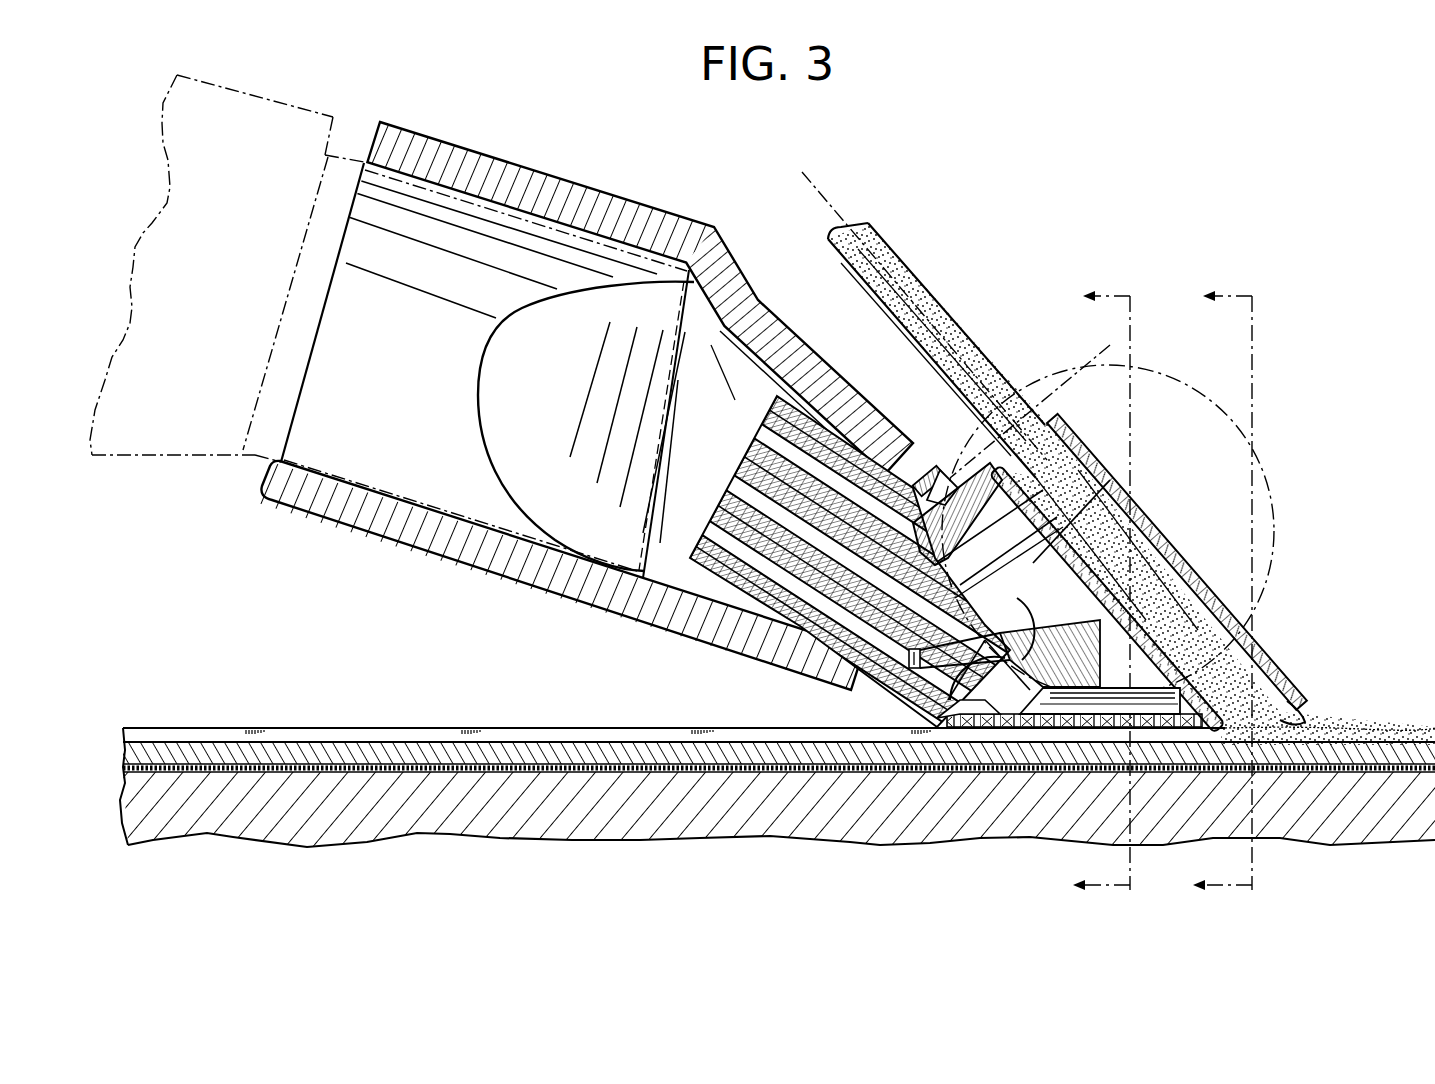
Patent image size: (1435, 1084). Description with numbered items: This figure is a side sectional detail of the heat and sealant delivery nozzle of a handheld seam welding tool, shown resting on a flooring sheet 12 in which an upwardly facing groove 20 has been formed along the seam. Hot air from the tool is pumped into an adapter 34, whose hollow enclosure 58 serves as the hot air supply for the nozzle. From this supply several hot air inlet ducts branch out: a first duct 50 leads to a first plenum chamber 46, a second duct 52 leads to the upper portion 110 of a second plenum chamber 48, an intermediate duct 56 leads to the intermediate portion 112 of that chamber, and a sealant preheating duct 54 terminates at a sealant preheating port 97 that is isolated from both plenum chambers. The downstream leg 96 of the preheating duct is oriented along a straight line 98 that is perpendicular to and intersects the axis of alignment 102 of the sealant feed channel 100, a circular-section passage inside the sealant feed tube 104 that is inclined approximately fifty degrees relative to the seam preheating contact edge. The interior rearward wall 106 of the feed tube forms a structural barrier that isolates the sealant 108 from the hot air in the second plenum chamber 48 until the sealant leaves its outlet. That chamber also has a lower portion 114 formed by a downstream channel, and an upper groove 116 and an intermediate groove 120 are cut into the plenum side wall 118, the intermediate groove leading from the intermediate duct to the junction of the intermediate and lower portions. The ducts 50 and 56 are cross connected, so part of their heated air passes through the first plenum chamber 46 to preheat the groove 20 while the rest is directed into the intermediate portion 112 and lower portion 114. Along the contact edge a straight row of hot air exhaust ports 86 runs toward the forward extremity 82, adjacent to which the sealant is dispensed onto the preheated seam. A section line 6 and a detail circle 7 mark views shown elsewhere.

The adapter 34 is at (494, 138).
The hollow enclosure 58 is at (540, 250).
The first hot air inlet duct 50 is at (727, 556).
The sealant preheating duct 54 is at (908, 500).
The second hot air inlet duct 52 is at (882, 546).
The intermediate duct 56 is at (846, 613).
The downstream leg 96 is at (937, 477).
The sealant preheating port 97 is at (932, 482).
The plenum side wall 118 is at (895, 688).
The intermediate groove 120 is at (1040, 598).
The intermediate portion 112 is at (1033, 567).
The sealant 108 is at (890, 262).
The axis of alignment 102 is at (805, 180).
The interior rearward wall 106 is at (1165, 620).
The upper groove 116 is at (1060, 497).
The upper portion 110 is at (1047, 457).
The lower portion 114 is at (1137, 650).
The sealant feed channel 100 is at (1288, 713).
The sealant feed tube 104 is at (1252, 672).
The straight line 98 is at (1105, 347).
The detail circle 7 is at (1282, 495).
The section line 6 is at (1114, 590).
The urethane linoleum flooring sheet 12 is at (292, 727).
The groove 20 is at (441, 727).
The hot air exhaust ports 86 is at (1113, 727).
The forward extremity 82 is at (1203, 727).
The first plenum chamber 46 is at (1093, 703).
The second plenum chamber 48 is at (958, 720).